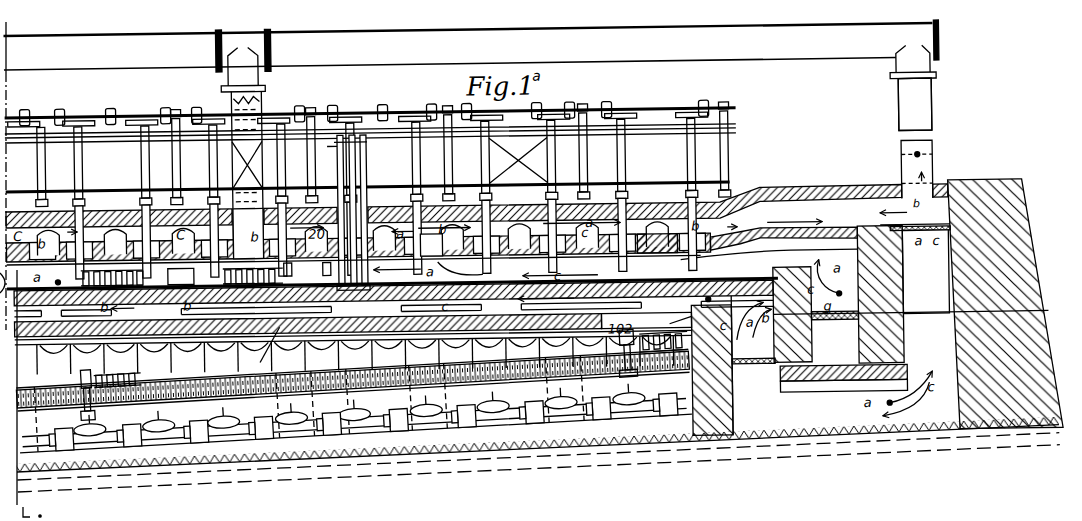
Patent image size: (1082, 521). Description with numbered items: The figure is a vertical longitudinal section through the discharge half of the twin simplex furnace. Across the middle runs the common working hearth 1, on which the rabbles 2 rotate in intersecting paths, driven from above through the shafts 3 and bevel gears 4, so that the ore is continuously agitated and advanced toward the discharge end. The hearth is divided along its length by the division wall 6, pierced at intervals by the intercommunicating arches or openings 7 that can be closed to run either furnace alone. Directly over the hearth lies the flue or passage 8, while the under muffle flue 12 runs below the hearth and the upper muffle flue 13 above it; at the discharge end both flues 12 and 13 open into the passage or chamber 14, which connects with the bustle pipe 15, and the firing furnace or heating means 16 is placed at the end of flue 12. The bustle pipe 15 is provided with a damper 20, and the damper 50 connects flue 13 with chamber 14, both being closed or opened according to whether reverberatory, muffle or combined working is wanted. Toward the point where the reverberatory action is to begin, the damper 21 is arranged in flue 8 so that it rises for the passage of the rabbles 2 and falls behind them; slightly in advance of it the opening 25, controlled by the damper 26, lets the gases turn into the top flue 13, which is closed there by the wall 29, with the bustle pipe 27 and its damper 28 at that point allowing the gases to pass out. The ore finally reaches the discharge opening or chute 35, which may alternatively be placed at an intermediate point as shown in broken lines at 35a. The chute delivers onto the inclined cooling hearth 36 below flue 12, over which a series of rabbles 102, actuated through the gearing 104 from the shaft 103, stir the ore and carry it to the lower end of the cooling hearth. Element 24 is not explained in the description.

The working hearth 1 is at (657, 256).
The rabbles 2 is at (312, 274).
The shafts 3 is at (370, 117).
The bevel gears 4 is at (363, 107).
The division wall 6 is at (392, 272).
The intercommunicating arches or openings 7 is at (137, 277).
The flue or passage 8 is at (354, 267).
The flue 12 is at (393, 300).
The flue 13 is at (530, 226).
The passage or chamber 14 is at (925, 272).
The bustle pipe 15 is at (914, 75).
The firing furnace or other heating means 16 is at (733, 365).
The damper 20 is at (927, 168).
The damper 21 is at (347, 279).
The nozzles 24 is at (241, 277).
The opening 25 is at (339, 210).
The damper 26 is at (451, 254).
The bustle pipe 27 is at (243, 119).
The damper 28 is at (248, 225).
The wall 29 is at (199, 211).
The discharge opening or chute 35 is at (352, 325).
The discharge opening or chute 35a is at (355, 351).
The inclined cooling hearth 36 is at (353, 348).
The damper 50 is at (915, 216).
The rabbles 102 is at (384, 373).
The shaft 103 is at (368, 415).
The gearing 104 is at (354, 413).